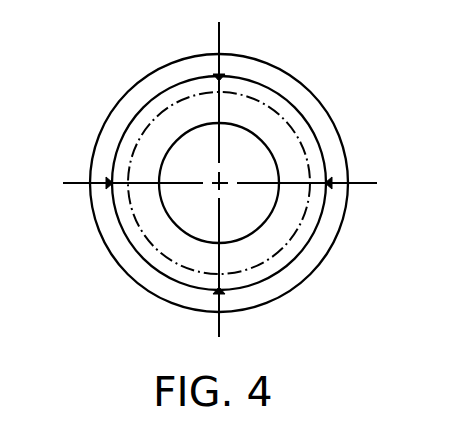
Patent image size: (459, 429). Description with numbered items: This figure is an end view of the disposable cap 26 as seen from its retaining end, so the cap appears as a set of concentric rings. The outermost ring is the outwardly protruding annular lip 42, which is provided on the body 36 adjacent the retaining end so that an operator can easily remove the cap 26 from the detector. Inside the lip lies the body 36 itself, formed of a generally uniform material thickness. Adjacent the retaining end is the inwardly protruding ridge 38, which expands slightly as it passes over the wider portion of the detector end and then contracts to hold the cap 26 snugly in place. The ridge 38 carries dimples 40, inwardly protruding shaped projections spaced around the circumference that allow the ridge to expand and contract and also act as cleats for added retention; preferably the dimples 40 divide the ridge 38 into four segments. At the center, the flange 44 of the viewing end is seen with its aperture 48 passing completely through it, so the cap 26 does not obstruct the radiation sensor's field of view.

The cap 26 is at (95, 52).
The body 36 is at (292, 73).
The ridge 38 is at (305, 110).
The dimples 40 is at (215, 75).
The annular lip 42 is at (261, 57).
The flange 44 is at (242, 217).
The aperture 48 is at (270, 150).